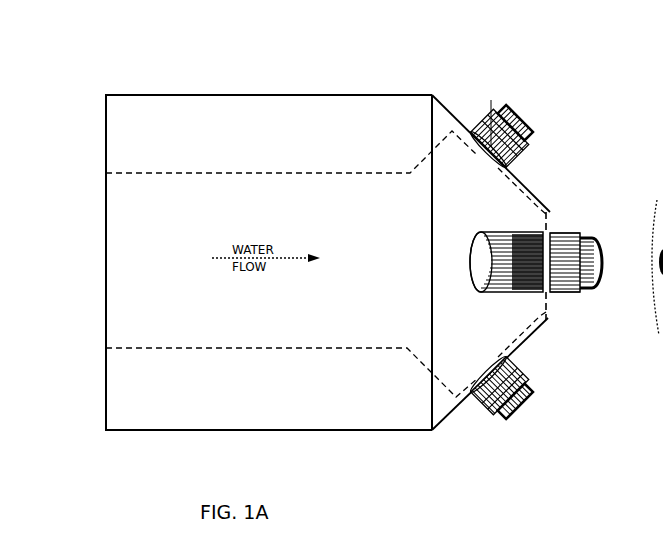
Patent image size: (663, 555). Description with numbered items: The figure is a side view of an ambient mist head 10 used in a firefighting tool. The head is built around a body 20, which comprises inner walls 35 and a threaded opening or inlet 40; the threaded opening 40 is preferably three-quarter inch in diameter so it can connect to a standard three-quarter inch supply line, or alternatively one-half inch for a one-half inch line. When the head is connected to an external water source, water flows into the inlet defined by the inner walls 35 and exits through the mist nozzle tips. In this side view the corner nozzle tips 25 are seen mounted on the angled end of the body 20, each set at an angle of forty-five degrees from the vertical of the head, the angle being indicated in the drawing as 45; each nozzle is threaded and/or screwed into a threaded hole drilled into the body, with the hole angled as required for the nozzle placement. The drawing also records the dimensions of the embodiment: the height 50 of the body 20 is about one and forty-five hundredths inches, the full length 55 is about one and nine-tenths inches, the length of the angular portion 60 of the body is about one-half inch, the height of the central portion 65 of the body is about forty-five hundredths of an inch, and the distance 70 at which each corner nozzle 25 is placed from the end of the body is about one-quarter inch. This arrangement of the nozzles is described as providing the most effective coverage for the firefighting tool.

The ambient mist head 10 is at (128, 438).
The body 20 is at (161, 88).
The corner nozzle tips 25 is at (543, 225).
The inner walls 35 is at (176, 168).
The threaded opening 40 is at (112, 280).
The nozzle angle (45 degrees) 45 is at (520, 189).
The height 50 is at (100, 430).
The full length 55 is at (550, 210).
The angular portion 60 is at (432, 432).
The central portion 65 is at (555, 212).
The distance 70 is at (550, 73).